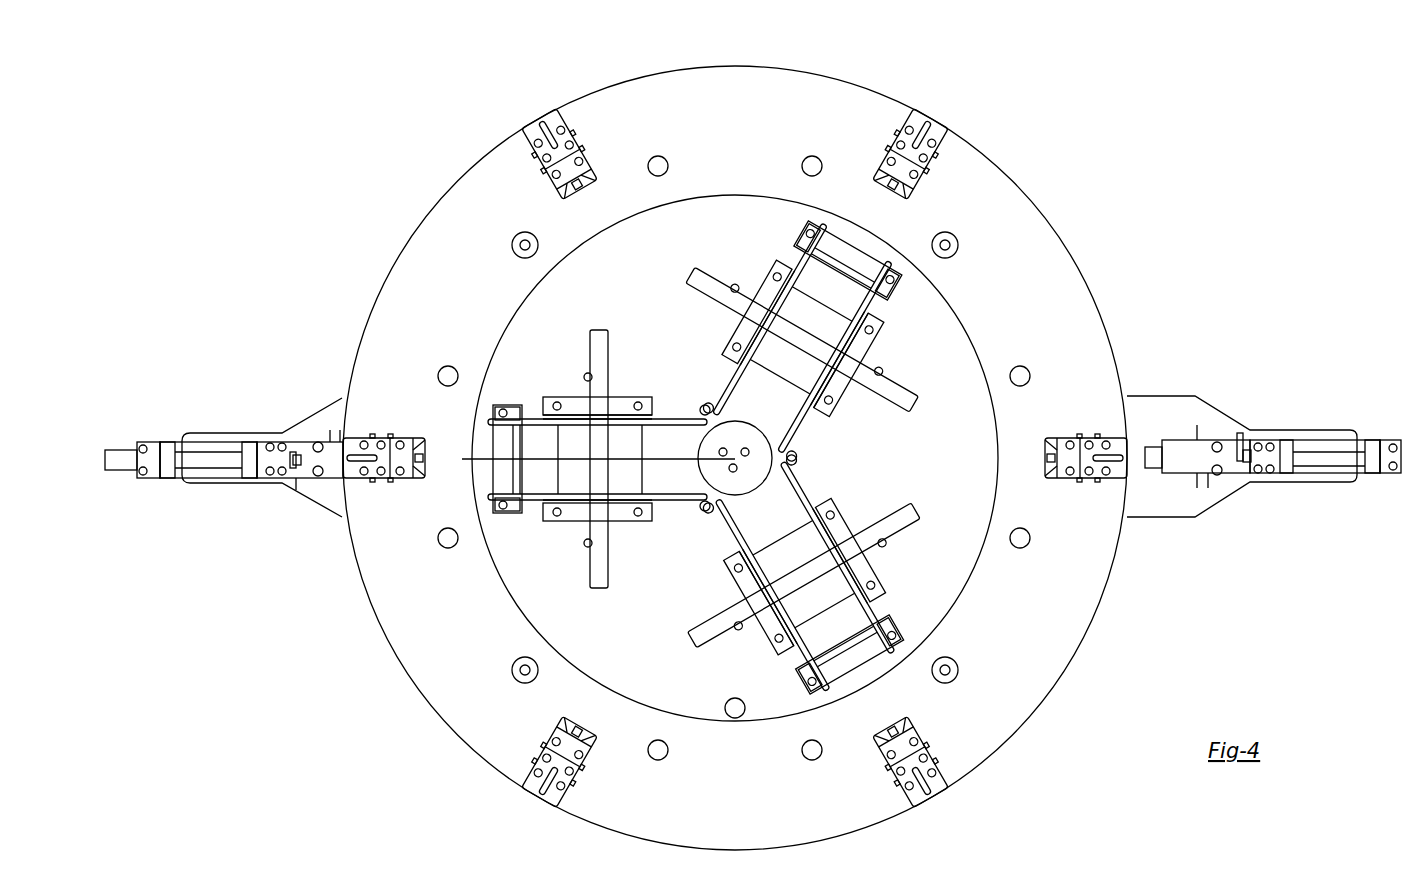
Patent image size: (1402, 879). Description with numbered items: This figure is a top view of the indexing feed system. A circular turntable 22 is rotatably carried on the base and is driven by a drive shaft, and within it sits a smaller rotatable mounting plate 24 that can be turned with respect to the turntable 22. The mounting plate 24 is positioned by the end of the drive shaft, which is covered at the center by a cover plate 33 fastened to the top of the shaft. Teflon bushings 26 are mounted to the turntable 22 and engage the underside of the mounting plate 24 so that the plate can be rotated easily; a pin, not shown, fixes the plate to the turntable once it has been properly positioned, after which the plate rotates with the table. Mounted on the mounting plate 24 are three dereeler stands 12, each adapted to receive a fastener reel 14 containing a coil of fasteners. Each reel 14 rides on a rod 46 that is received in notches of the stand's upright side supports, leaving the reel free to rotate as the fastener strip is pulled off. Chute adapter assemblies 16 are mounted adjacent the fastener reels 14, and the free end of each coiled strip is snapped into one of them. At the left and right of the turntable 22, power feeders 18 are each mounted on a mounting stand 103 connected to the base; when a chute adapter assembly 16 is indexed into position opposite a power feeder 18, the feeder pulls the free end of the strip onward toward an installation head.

The dereeler stand 12 is at (550, 370).
The fastener reel 14 is at (606, 486).
The chute adapter assembly 16 is at (523, 104).
The power feeder 18 is at (275, 382).
The turntable 22 is at (1035, 272).
The mounting plate 24 is at (538, 590).
The Teflon bushing 26 is at (586, 372).
The cover plate 33 is at (753, 472).
The rod 46 is at (606, 345).
The mounting stand 103 is at (320, 496).